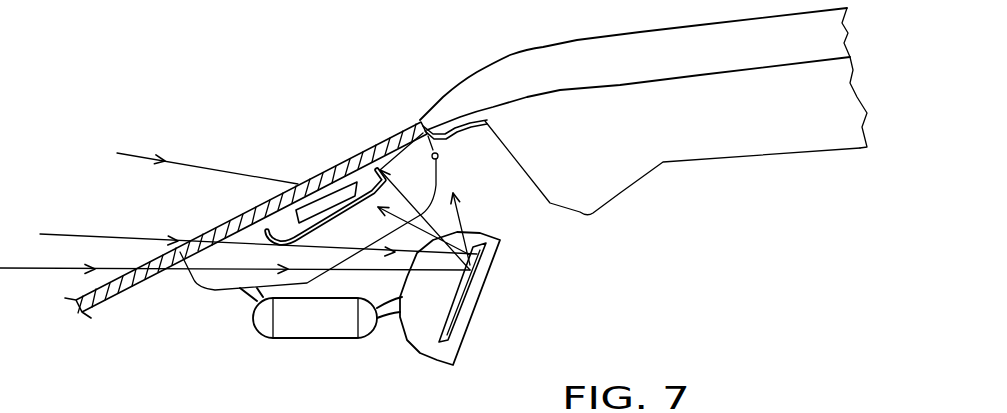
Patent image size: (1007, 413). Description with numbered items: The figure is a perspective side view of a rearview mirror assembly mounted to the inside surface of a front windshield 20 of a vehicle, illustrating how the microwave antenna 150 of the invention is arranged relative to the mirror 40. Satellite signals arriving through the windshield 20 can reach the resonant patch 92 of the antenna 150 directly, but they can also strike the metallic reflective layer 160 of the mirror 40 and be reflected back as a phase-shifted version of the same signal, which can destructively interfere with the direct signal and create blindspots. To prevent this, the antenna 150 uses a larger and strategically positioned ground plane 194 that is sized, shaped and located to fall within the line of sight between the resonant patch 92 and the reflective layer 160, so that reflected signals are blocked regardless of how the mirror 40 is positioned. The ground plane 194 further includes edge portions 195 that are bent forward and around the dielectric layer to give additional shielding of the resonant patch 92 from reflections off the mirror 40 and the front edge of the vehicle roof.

The front windshield 20 is at (182, 241).
The mirror 40 is at (502, 257).
The resonant patch 92 is at (330, 192).
The microwave antenna 150 is at (302, 157).
The reflective layer 160 is at (454, 315).
The ground plane 194 is at (341, 214).
The edge portions 195 is at (378, 166).